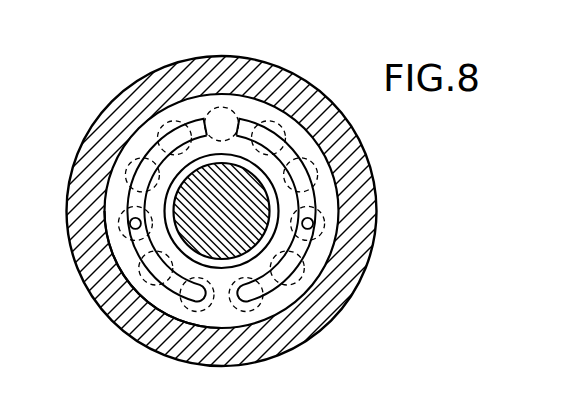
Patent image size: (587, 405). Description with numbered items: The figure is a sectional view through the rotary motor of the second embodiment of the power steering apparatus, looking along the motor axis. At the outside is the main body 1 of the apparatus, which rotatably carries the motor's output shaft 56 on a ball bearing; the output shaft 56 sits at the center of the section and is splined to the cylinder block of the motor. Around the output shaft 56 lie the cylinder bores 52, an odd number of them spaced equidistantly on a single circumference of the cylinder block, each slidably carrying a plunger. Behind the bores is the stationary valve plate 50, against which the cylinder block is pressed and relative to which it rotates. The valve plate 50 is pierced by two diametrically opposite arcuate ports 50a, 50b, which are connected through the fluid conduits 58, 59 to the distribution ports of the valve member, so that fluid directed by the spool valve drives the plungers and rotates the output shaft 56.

The main body 1 is at (165, 75).
The stationary valve plate 50 is at (228, 256).
The arcuate port 50a is at (133, 196).
The arcuate port 50b is at (305, 178).
The cylinder bores 52 is at (233, 120).
The output shaft 56 is at (198, 233).
The fluid conduit 58 is at (117, 267).
The fluid conduit 59 is at (305, 232).